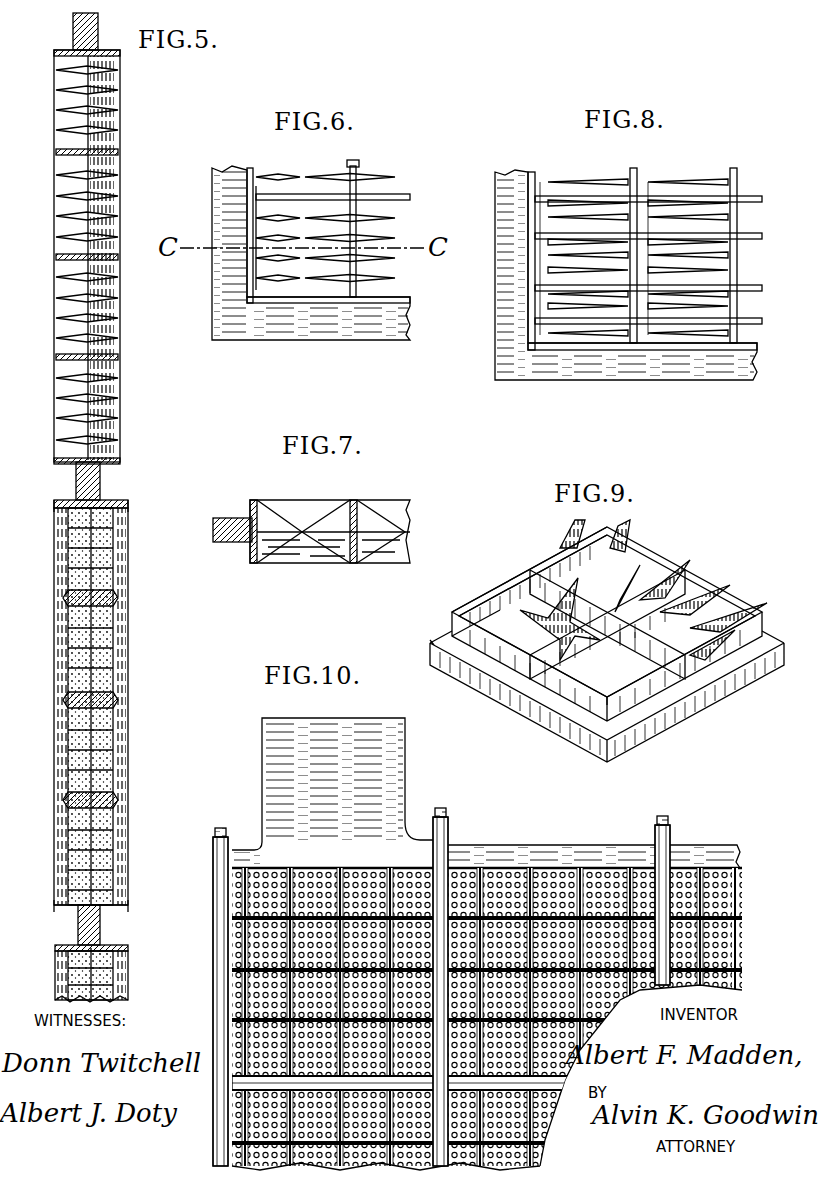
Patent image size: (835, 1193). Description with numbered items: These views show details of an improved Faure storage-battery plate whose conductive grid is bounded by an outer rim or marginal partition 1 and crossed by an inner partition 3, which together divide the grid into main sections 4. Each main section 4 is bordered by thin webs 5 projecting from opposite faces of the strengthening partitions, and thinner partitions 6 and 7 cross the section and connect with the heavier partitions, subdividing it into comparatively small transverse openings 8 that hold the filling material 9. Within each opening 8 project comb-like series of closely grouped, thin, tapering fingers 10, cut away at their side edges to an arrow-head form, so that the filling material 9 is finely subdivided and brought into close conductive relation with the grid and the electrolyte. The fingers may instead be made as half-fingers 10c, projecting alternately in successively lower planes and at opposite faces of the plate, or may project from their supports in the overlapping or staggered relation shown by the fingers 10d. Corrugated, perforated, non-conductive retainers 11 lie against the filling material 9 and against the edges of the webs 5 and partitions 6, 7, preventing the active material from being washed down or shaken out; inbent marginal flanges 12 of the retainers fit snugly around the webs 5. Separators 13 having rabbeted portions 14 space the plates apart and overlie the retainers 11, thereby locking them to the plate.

In FIG. 5, the outer rim or marginal partition 1 is at (73, 26).
In FIG. 6, the outer rim or marginal partition 1 is at (230, 176).
In FIG. 7, the outer rim or marginal partition 1 is at (213, 530).
In FIG. 8, the outer rim or marginal partition 1 is at (510, 176).
In FIG. 9, the outer rim or marginal partition 1 is at (440, 672).
In FIG. 10, the outer rim or marginal partition 1 is at (572, 850).
In FIG. 5, the inner partition 3 is at (100, 480).
In FIG. 10, the inner partition 3 is at (235, 1083).
In FIG. 5, the main section 4 is at (56, 528).
In FIG. 5, the thin web 5 is at (60, 52).
In FIG. 6, the thin web 5 is at (248, 272).
In FIG. 7, the thin web 5 is at (252, 503).
In FIG. 8, the thin web 5 is at (528, 306).
In FIG. 9, the thin web 5 is at (530, 738).
In FIG. 6, the partition 6 is at (353, 166).
In FIG. 7, the partition 6 is at (354, 500).
In FIG. 8, the partition 6 is at (634, 170).
In FIG. 9, the partition 6 is at (607, 624).
In FIG. 5, the partition 7 is at (58, 152).
In FIG. 6, the partition 7 is at (410, 195).
In FIG. 7, the partition 7 is at (400, 508).
In FIG. 8, the partition 7 is at (548, 233).
In FIG. 9, the partition 7 is at (536, 596).
In FIG. 5, the transverse opening 8 is at (58, 122).
In FIG. 6, the transverse opening 8 is at (300, 290).
In FIG. 8, the transverse opening 8 is at (688, 194).
In FIG. 5, the filling material 9 is at (113, 556).
In FIG. 5, the tapering finger 10 is at (118, 94).
In FIG. 6, the tapering finger 10 is at (266, 178).
In FIG. 7, the tapering finger 10 is at (276, 506).
In FIG. 9, the half-finger 10c is at (700, 572).
In FIG. 8, the overlapping finger 10d is at (590, 183).
In FIG. 5, the retainer 11 is at (60, 540).
In FIG. 10, the retainer 11 is at (318, 866).
In FIG. 5, the inbent marginal flange 12 is at (70, 500).
In FIG. 10, the inbent marginal flange 12 is at (350, 866).
In FIG. 10, the separator 13 is at (214, 916).
In FIG. 10, the rabbeted portion 14 is at (216, 830).